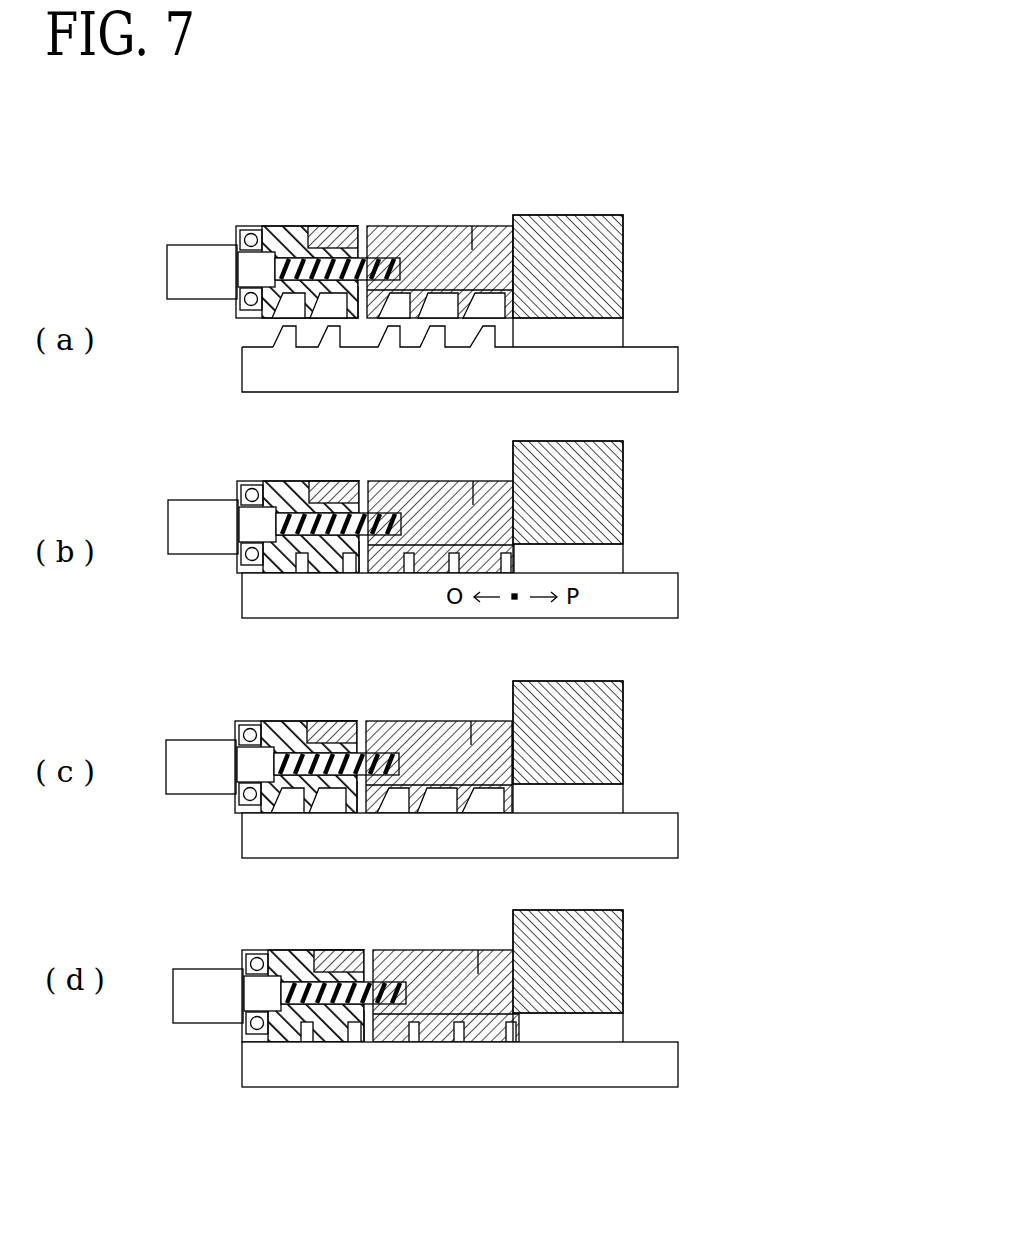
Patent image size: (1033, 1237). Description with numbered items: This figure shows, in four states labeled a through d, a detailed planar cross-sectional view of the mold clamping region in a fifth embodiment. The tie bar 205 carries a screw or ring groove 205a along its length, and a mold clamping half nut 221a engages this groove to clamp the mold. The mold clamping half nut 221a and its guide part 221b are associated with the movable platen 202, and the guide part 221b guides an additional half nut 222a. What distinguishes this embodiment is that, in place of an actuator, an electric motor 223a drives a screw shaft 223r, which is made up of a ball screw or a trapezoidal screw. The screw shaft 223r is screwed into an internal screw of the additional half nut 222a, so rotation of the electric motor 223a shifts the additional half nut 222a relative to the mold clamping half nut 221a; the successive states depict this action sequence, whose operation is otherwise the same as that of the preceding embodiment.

The movable platen 202 is at (580, 278).
The tie bar 205 is at (630, 372).
The ring groove 205a is at (333, 337).
The mold clamping half nut 221a is at (476, 243).
The guide part 221b is at (344, 504).
The additional half nut 222a is at (279, 227).
The electric motor 223a is at (207, 273).
The screw shaft 223r is at (373, 262).